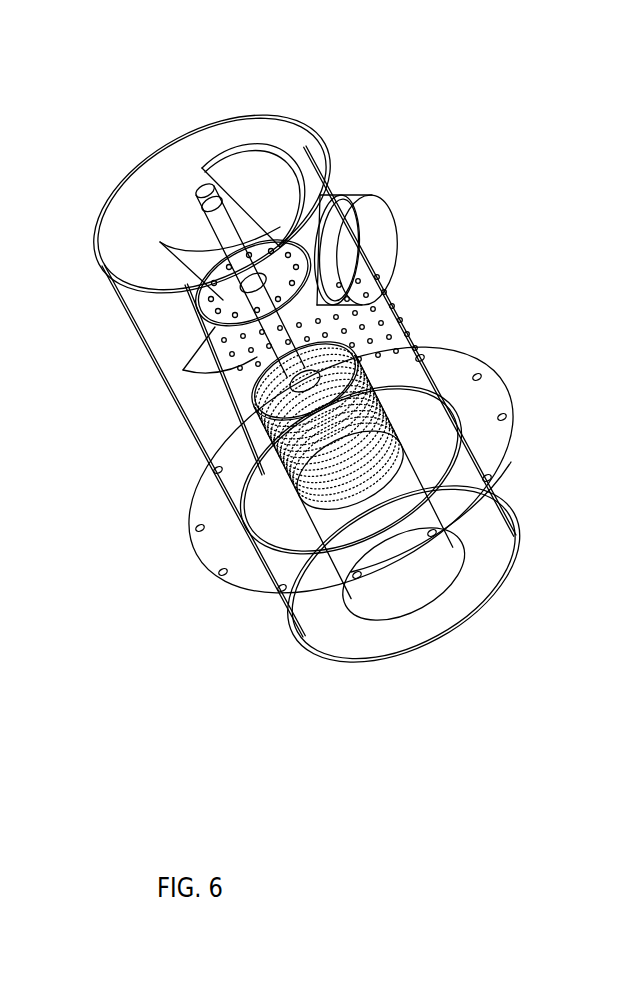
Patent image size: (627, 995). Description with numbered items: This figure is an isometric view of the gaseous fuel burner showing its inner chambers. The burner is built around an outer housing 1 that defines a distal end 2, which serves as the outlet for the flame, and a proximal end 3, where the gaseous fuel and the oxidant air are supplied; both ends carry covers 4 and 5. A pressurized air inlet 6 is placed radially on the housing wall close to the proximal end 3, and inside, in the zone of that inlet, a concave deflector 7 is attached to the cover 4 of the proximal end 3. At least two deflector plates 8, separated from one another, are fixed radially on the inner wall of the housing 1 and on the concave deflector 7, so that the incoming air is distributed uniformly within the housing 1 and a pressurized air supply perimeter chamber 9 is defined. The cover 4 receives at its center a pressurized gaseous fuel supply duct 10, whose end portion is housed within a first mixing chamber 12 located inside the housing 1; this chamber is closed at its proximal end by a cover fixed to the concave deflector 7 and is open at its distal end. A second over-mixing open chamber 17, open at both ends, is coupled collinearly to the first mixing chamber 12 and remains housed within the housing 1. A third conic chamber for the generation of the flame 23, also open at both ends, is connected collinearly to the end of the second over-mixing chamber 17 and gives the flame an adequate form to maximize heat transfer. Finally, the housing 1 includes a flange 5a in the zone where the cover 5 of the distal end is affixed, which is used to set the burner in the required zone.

The outer housing 1 is at (148, 378).
The distal end 2 is at (510, 460).
The proximal end 3 is at (165, 136).
The cover 4 is at (222, 148).
The cover 5 is at (285, 527).
The flange 5a is at (490, 407).
The pressurized air inlet 6 is at (368, 235).
The concave deflector 7 is at (263, 213).
The deflector plates 8 is at (315, 232).
The pressurized air supply perimeter chamber 9 is at (380, 330).
The pressurized gaseous fuel supply duct 10 is at (200, 188).
The first mixing chamber 12 is at (245, 342).
The second over-mixing open chamber 17 is at (278, 463).
The third conic chamber for the generation of the flame 23 is at (403, 593).